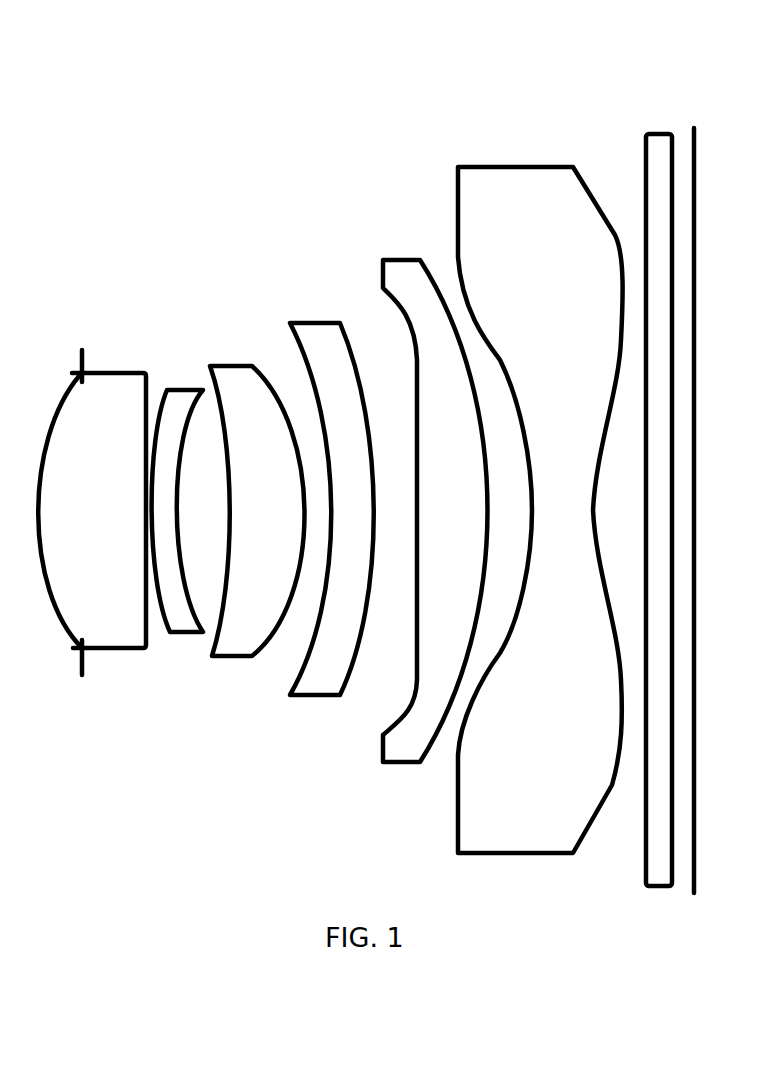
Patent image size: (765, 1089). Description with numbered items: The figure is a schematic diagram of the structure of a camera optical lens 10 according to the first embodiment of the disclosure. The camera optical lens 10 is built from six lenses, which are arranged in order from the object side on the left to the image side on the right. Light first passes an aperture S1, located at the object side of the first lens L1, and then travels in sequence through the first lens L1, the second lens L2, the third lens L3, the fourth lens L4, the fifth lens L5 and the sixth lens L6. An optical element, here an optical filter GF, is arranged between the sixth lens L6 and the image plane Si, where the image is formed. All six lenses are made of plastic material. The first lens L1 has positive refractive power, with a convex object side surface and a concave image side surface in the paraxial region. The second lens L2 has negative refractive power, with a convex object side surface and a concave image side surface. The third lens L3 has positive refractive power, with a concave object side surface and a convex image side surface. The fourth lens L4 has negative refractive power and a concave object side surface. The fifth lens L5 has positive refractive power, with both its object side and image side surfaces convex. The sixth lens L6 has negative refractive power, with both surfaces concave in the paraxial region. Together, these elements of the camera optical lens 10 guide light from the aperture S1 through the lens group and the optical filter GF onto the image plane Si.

The camera optical lens 10 is at (378, 57).
The aperture S1 is at (62, 510).
The first lens L1 is at (92, 496).
The second lens L2 is at (177, 496).
The third lens L3 is at (257, 494).
The fourth lens L4 is at (332, 496).
The fifth lens L5 is at (435, 497).
The sixth lens L6 is at (540, 492).
The optical filter GF is at (662, 494).
The image plane Si is at (700, 495).